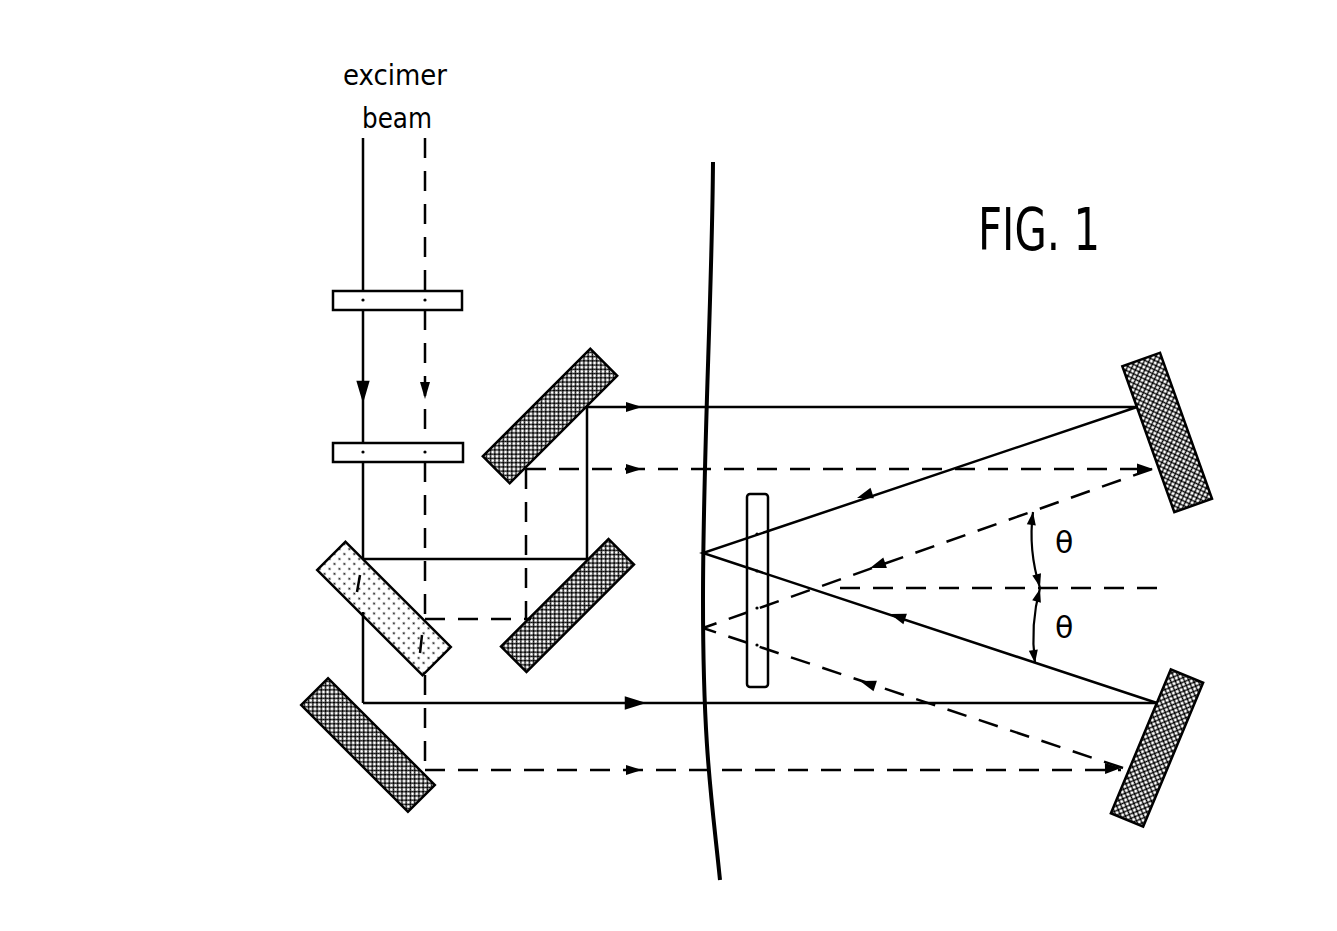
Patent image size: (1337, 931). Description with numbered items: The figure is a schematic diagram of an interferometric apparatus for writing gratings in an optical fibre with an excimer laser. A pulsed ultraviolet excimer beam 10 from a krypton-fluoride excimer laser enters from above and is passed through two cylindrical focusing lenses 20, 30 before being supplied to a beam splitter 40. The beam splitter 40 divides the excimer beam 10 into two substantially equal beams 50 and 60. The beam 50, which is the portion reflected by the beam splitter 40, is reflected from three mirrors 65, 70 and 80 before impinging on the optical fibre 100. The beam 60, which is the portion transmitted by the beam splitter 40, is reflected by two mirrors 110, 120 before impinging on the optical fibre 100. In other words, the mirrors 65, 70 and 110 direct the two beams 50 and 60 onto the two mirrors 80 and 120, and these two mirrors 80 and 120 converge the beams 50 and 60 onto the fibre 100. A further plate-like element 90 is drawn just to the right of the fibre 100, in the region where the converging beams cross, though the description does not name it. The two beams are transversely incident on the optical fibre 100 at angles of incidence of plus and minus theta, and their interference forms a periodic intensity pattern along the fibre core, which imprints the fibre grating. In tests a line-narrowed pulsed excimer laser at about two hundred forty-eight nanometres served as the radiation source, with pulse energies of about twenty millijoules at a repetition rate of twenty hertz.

The excimer beam 10 is at (426, 216).
The cylindrical lens 20 is at (462, 297).
The cylindrical lens 30 is at (345, 441).
The beam splitter 40 is at (327, 557).
The beam 50 is at (1013, 406).
The beam 60 is at (967, 773).
The mirror 65 is at (622, 552).
The mirror 70 is at (617, 375).
The mirror 80 is at (1163, 367).
The cylindrical lens 90 is at (768, 503).
The optical fibre 100 is at (713, 219).
The mirror 110 is at (435, 785).
The mirror 120 is at (1202, 682).